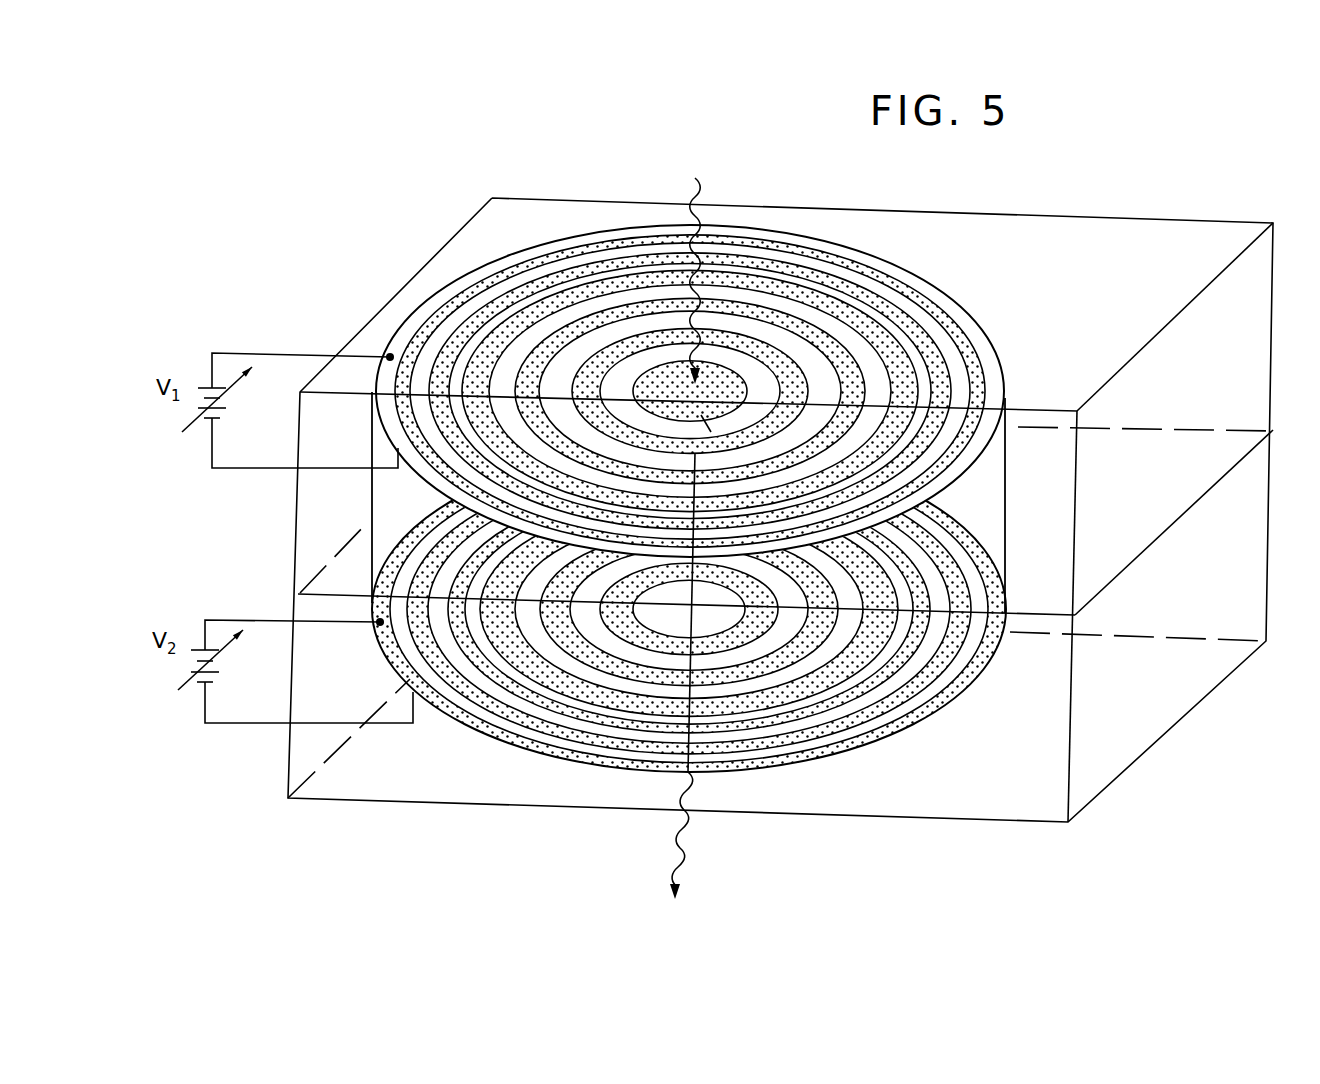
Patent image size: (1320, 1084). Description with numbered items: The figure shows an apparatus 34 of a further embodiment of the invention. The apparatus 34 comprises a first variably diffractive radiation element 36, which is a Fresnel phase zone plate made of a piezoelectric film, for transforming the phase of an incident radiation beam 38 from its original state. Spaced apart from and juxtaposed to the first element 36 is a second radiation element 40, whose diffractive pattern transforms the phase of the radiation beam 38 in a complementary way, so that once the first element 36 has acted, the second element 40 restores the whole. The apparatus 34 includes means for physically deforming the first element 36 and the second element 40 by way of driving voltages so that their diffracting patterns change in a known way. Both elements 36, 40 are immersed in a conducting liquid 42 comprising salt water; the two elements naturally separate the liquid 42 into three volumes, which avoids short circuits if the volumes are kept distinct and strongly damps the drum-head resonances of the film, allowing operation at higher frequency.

The apparatus 34 is at (548, 182).
The first variably diffractive radiation element 36 is at (976, 309).
The incident radiation beam 38 is at (695, 178).
The second radiation element 40 is at (932, 708).
The conducting liquid 42 is at (1132, 494).